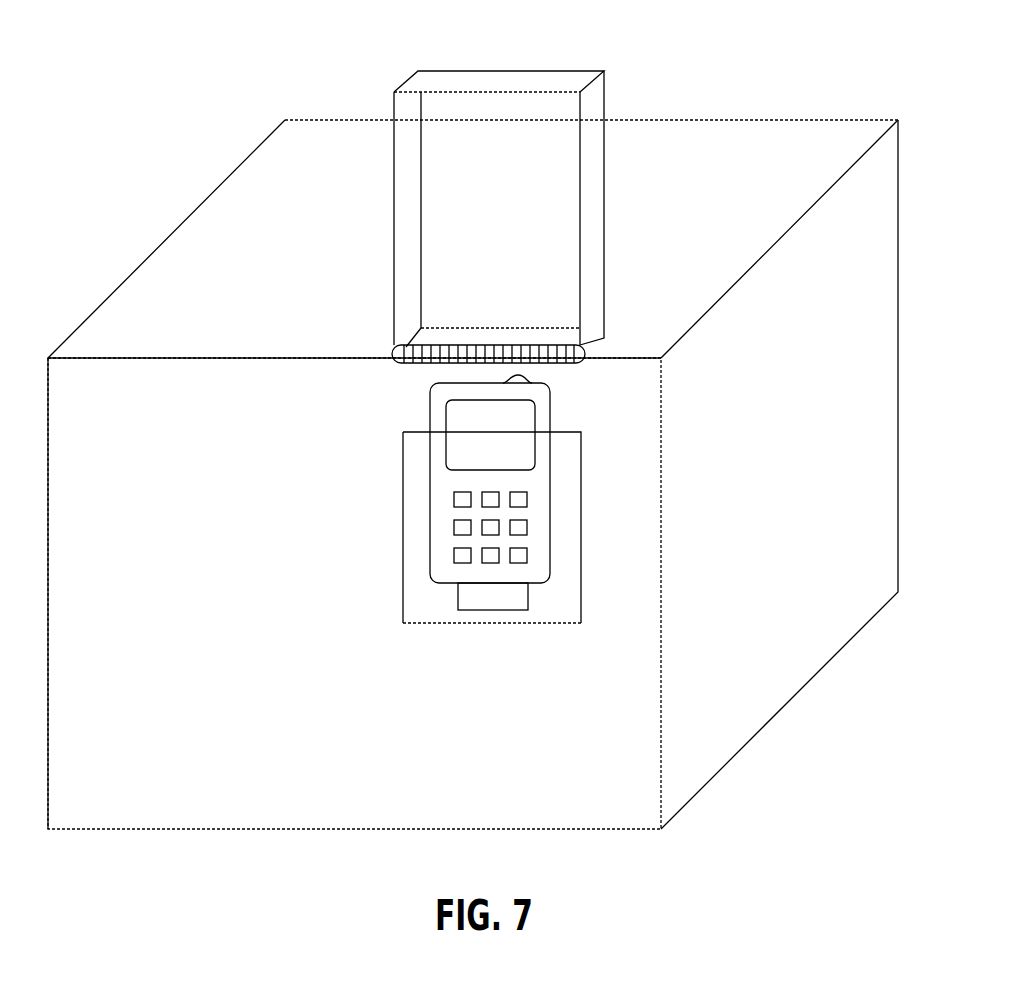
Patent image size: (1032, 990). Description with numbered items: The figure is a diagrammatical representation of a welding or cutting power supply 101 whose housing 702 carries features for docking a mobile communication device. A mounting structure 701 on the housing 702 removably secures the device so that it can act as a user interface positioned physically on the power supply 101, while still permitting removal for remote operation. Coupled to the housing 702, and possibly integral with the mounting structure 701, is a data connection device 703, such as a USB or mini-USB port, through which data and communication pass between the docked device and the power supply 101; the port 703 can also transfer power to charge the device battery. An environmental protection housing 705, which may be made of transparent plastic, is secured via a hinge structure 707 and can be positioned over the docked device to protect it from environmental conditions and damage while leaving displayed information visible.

The power supply 101 is at (765, 163).
The mounting structure 701 is at (563, 570).
The housing 702 is at (579, 765).
The data connection device 703 is at (487, 610).
The environmental protection housing 705 is at (463, 195).
The hinge structure 707 is at (588, 352).